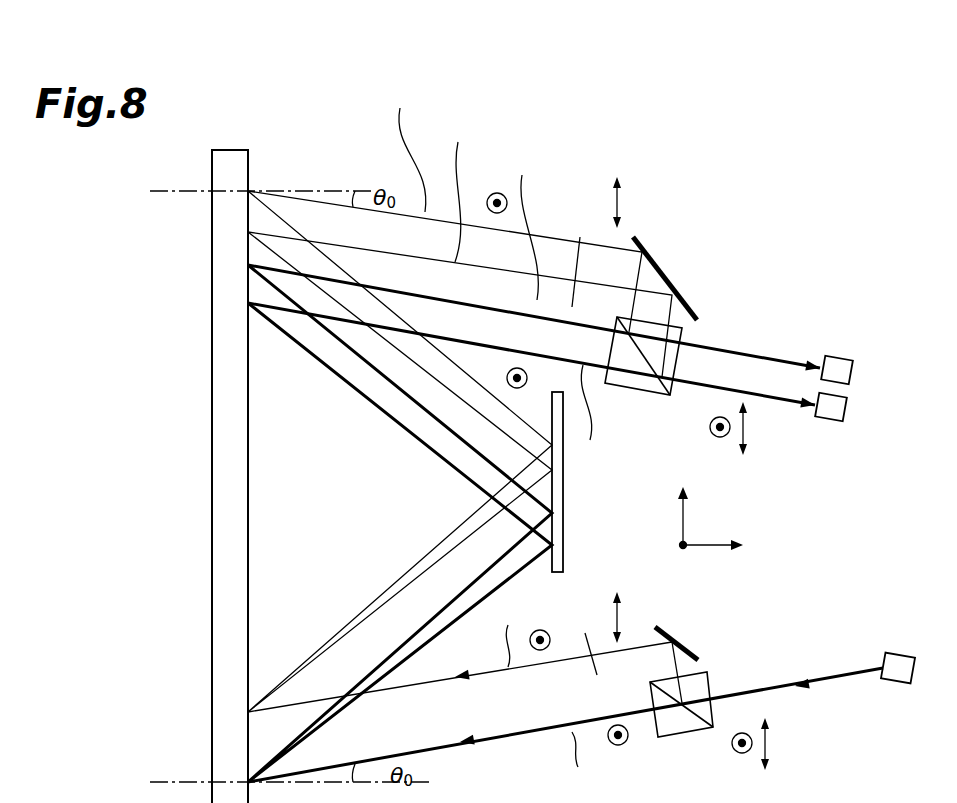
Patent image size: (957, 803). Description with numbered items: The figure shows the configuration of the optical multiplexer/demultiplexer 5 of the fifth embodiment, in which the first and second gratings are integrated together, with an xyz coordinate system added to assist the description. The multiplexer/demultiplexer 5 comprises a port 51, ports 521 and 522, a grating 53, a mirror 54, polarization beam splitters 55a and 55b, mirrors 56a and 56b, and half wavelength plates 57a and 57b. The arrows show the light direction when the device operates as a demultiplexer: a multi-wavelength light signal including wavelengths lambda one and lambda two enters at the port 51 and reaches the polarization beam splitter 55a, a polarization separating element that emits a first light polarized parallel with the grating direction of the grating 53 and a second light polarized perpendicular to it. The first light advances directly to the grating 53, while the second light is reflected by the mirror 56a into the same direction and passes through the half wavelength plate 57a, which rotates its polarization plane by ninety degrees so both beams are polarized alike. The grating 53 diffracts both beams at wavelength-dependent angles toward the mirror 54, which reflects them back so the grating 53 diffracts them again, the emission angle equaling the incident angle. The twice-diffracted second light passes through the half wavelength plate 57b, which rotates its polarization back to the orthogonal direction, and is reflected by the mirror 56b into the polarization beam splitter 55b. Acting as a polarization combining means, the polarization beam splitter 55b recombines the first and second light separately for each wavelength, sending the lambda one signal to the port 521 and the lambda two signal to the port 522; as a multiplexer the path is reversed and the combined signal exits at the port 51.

The optical multiplexer/demultiplexer 5 is at (806, 142).
The port 51 is at (900, 655).
The port 521 is at (840, 358).
The port 522 is at (838, 420).
The grating 53 is at (211, 650).
The mirror 54 is at (565, 527).
The polarization beam splitter 55a is at (697, 737).
The polarization beam splitter 55b is at (655, 400).
The mirror 56a is at (668, 633).
The mirror 56b is at (700, 320).
The ½ wavelength plate 57a is at (592, 632).
The ½ wavelength plate 57b is at (583, 235).